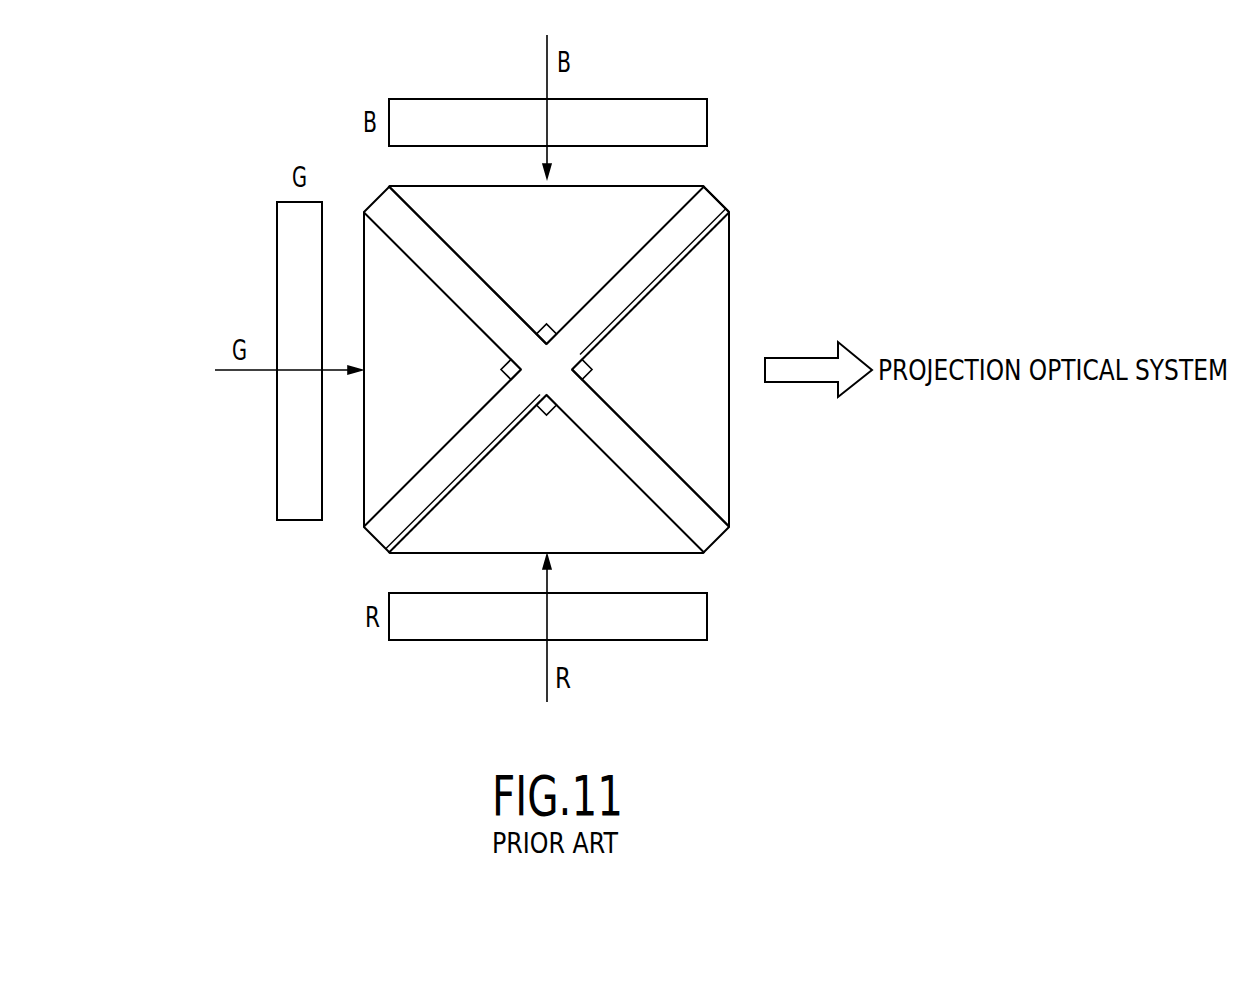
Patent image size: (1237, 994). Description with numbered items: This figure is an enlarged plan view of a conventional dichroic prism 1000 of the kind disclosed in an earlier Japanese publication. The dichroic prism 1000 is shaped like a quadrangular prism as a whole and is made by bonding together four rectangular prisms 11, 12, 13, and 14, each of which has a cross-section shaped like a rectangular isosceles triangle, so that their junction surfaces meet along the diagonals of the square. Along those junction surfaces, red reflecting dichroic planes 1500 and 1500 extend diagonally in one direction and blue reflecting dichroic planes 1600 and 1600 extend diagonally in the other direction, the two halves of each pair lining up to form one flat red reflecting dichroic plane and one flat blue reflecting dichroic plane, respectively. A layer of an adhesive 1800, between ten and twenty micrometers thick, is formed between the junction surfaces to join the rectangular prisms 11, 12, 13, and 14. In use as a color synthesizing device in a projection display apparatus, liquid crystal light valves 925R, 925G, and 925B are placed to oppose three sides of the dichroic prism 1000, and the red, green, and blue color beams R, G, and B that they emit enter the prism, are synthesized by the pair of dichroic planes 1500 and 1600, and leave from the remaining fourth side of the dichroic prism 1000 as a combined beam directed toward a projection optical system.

The dichroic prism 1000 is at (748, 157).
The rectangular prism 11 is at (722, 290).
The rectangular prism 12 is at (607, 540).
The rectangular prism 13 is at (376, 320).
The rectangular prism 14 is at (496, 195).
The liquid crystal light valve 925R is at (467, 627).
The liquid crystal light valve 925G is at (283, 473).
The liquid crystal light valve 925B is at (673, 108).
The red reflecting dichroic plane 1500 is at (726, 237).
The blue reflecting dichroic plane 1600 is at (404, 184).
The adhesive 1800 is at (710, 208).